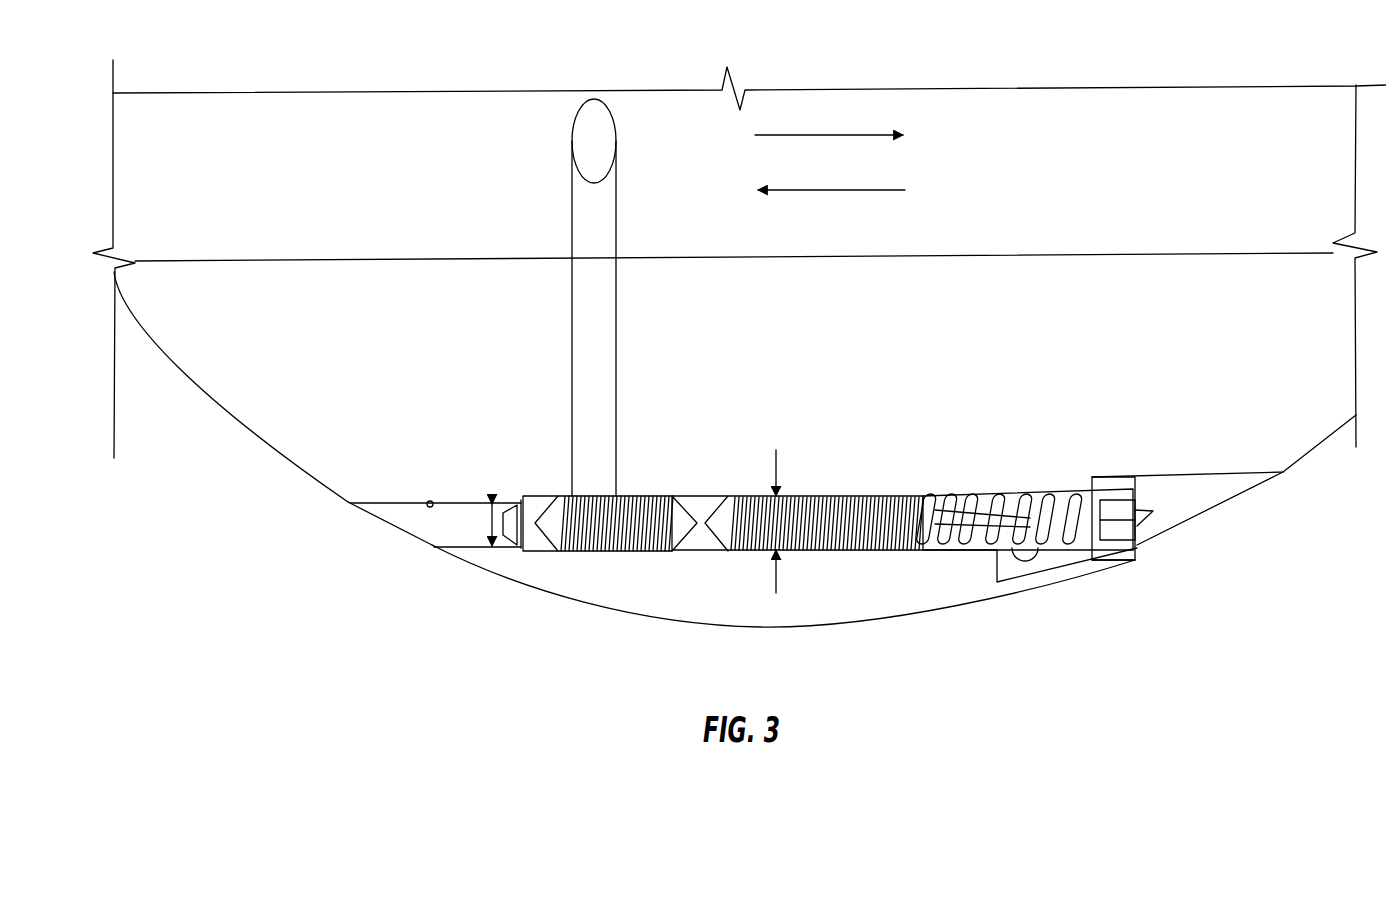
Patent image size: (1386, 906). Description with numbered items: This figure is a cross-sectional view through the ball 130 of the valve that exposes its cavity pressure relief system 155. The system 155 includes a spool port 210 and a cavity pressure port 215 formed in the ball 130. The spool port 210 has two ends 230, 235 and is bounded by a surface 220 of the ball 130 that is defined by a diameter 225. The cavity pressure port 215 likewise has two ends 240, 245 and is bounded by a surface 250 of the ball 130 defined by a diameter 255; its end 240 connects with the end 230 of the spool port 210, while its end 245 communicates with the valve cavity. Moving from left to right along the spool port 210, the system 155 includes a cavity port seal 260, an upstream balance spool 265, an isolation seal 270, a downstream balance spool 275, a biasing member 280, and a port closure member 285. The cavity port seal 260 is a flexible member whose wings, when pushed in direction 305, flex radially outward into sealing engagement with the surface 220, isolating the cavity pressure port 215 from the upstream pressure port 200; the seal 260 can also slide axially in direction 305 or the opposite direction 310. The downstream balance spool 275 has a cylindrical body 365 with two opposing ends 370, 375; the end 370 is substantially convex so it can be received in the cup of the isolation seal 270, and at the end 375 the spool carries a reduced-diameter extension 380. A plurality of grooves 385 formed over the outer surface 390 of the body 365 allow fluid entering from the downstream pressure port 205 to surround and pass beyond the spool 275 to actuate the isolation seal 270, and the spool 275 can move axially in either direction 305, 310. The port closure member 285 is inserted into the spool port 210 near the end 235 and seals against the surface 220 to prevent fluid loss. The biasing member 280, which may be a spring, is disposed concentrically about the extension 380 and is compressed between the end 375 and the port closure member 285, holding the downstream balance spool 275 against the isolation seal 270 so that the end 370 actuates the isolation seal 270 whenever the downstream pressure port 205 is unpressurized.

The ball 130 is at (351, 360).
The cavity pressure relief system 155 is at (845, 358).
The upstream pressure port 200 is at (603, 418).
The downstream pressure port 205 is at (1025, 552).
The spool port 210 is at (1010, 478).
The cavity pressure port 215 is at (373, 497).
The surface 220 is at (942, 496).
The diameter 225 is at (778, 462).
The end 230 is at (532, 498).
The end 235 is at (1118, 558).
The end 240 is at (512, 508).
The end 245 is at (380, 518).
The surface 250 is at (430, 502).
The diameter 255 is at (488, 522).
The cavity port seal 260 is at (538, 550).
The upstream balance spool 265 is at (617, 552).
The isolation seal 270 is at (707, 506).
The downstream balance spool 275 is at (805, 485).
The biasing member 280 is at (1022, 496).
The port closure member 285 is at (1128, 490).
The direction 305 is at (800, 192).
The direction 310 is at (800, 137).
The cylindrical body 365 is at (828, 550).
The end 370 is at (717, 549).
The end 375 is at (925, 550).
The reduced-diameter extension 380 is at (968, 496).
The grooves 385 is at (875, 550).
The outer surface 390 is at (898, 550).